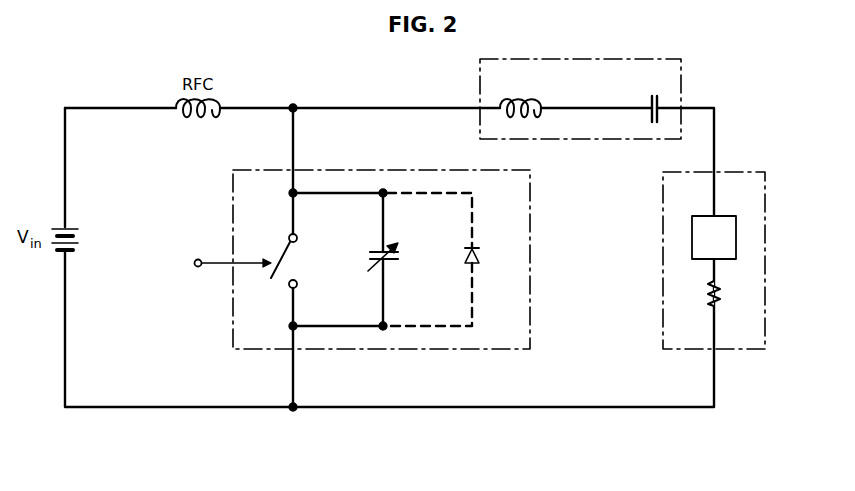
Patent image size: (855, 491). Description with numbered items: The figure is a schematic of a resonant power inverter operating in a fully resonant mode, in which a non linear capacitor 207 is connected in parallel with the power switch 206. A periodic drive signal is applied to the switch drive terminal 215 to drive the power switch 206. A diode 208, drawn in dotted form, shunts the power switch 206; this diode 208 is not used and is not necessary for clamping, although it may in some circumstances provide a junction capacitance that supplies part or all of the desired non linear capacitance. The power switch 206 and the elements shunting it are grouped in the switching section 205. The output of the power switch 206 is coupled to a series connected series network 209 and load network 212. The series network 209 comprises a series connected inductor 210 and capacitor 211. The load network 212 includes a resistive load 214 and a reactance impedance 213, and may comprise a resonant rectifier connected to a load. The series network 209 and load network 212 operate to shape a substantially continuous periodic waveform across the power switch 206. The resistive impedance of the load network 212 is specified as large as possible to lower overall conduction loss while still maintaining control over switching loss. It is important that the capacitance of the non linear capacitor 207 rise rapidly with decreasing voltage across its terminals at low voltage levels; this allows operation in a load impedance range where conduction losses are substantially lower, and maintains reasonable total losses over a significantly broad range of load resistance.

The switching network 205 is at (233, 180).
The power switch 206 is at (295, 261).
The non linear capacitor 207 is at (400, 257).
The diode 208 is at (452, 259).
The series network 209 is at (578, 59).
The inductor 210 is at (520, 95).
The capacitor 211 is at (656, 99).
The load network 212 is at (663, 193).
The reactance impedance 213 is at (756, 207).
The resistive load 214 is at (733, 293).
The switch drive terminal 215 is at (212, 263).